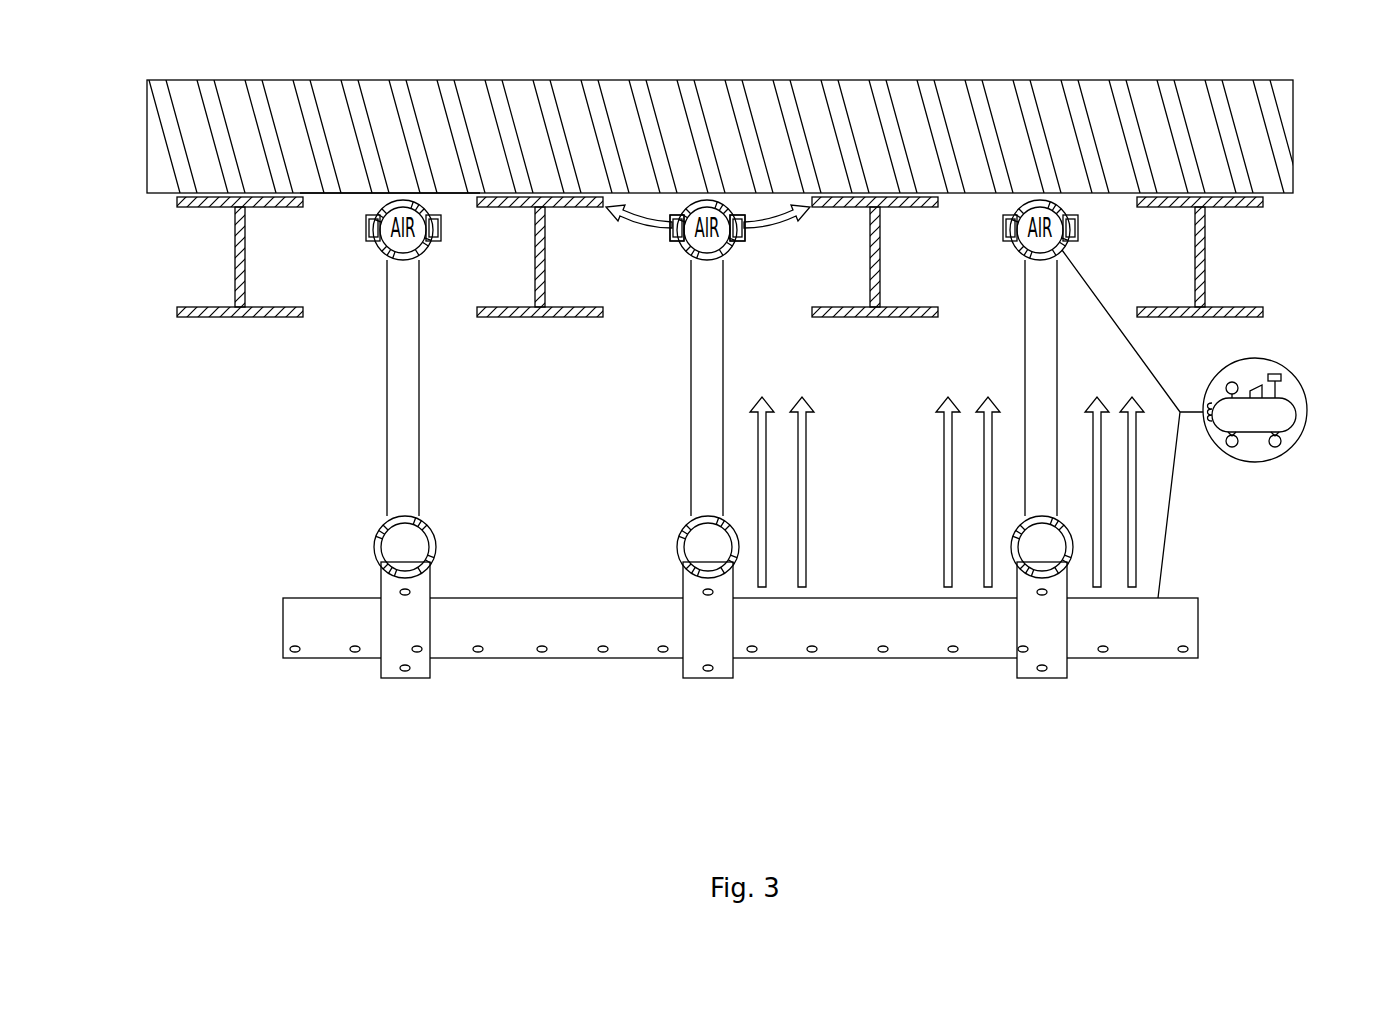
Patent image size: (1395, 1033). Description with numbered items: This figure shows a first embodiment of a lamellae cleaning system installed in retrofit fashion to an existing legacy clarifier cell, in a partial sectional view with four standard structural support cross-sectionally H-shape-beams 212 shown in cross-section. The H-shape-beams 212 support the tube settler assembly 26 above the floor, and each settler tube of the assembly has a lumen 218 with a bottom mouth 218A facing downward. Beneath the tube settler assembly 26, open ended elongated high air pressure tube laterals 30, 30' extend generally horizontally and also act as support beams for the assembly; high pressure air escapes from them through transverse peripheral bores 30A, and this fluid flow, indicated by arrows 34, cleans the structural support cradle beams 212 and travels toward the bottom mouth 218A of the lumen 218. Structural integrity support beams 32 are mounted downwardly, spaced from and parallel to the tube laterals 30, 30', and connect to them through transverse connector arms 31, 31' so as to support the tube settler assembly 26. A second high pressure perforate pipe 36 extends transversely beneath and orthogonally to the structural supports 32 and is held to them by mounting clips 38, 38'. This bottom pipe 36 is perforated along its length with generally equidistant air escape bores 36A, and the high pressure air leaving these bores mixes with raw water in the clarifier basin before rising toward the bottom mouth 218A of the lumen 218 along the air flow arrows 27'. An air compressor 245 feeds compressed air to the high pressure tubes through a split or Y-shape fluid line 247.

The tube settler assembly 26 is at (1105, 105).
The lumen 218 is at (605, 140).
The structural support cross-sectionally H-shape-beams 212 is at (232, 256).
The bottom mouth 218A is at (323, 197).
The high air pressure tube lateral 30 is at (609, 347).
The high air pressure tube lateral 30' is at (728, 140).
The transverse peripheral bores 30A is at (672, 217).
The fluid flow arrows 34 is at (640, 226).
The transverse connector arm 31 is at (673, 395).
The transverse connector arm 31' is at (796, 388).
The air flow arrows 27' is at (947, 492).
The second high pressure perforate pipe 36 is at (1173, 625).
The air escape bores 36A is at (918, 657).
The mounting clip 38 is at (672, 657).
The mounting clip 38' is at (642, 664).
The structural integrity support beam 32 is at (378, 532).
The split or Y-shape fluid line 247 is at (1190, 412).
The air compressor 245 is at (1275, 460).